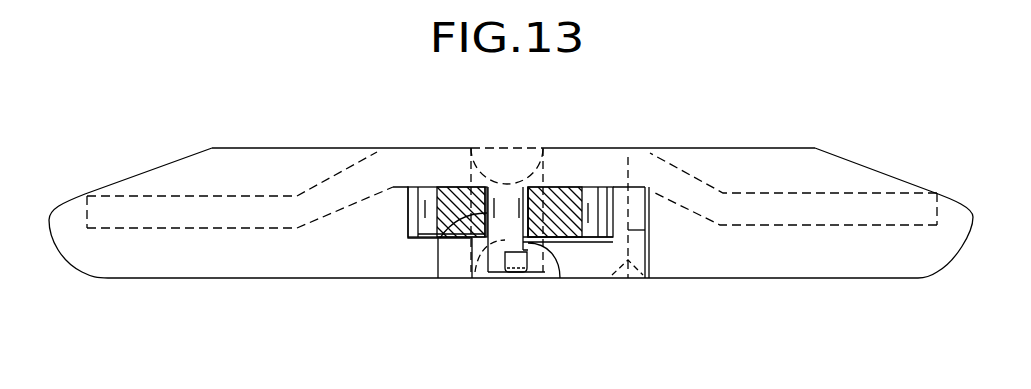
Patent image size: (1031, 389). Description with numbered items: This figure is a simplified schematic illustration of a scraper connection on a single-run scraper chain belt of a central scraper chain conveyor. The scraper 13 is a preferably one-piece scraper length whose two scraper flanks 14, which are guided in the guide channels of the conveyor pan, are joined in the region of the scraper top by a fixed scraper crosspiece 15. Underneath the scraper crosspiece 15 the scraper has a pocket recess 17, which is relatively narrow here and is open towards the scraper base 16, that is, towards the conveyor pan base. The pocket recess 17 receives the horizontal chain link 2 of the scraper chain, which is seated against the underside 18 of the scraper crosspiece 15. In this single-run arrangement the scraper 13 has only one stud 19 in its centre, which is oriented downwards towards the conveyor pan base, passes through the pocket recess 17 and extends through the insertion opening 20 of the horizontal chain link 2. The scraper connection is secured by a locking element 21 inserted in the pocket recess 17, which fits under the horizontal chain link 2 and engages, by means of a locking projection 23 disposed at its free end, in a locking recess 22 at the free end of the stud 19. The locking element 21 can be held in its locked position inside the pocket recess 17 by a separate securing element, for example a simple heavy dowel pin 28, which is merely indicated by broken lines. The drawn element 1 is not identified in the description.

The sensor element 1 is at (507, 165).
The horizontal chain link 2 is at (457, 200).
The scraper 13 is at (783, 155).
The scraper flank 14 is at (150, 186).
The scraper crosspiece 15 is at (573, 160).
The scraper base 16 is at (800, 279).
The pocket recess 17 is at (455, 262).
The underside of the scraper crosspiece 18 is at (428, 186).
The stud 19 is at (497, 250).
The insertion opening 20 is at (440, 236).
The locking element 21 is at (590, 258).
The locking recess 22 is at (514, 273).
The locking projection 23 is at (545, 252).
The heavy dowel pin 28 is at (650, 230).